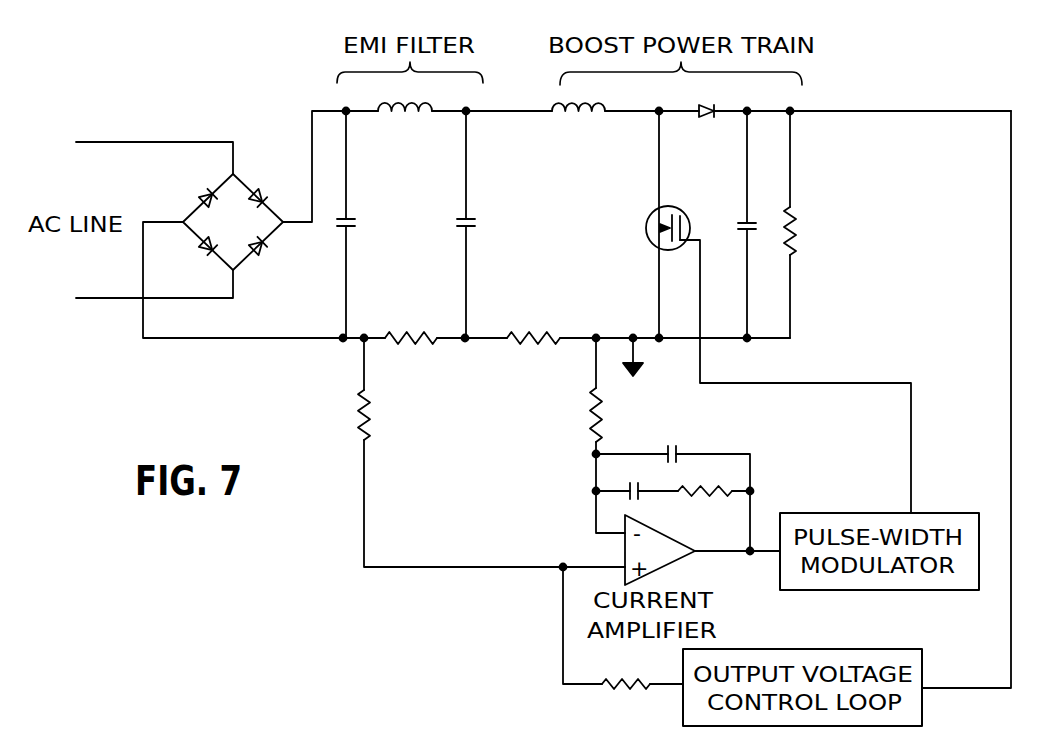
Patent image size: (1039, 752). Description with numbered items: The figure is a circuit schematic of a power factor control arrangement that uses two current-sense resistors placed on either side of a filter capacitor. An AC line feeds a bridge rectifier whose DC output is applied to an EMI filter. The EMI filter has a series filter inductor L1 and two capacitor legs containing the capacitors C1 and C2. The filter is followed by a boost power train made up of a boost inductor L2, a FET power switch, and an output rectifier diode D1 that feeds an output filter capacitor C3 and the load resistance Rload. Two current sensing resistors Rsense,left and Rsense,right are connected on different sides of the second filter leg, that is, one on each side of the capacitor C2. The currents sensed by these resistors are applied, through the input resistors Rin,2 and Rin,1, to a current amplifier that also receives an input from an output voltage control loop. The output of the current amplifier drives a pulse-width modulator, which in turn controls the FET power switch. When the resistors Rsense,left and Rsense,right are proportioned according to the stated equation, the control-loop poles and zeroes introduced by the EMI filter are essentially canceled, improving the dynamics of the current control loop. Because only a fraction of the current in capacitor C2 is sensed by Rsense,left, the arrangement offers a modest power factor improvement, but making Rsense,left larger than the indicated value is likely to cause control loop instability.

The series filter inductor L1 is at (405, 92).
The boost inductor L2 is at (578, 93).
The output rectifier diode D1 is at (710, 96).
The capacitor C1 is at (364, 225).
The capacitor C2 is at (484, 225).
The output filter capacitor C3 is at (731, 225).
The load Rload is at (820, 223).
The current sensing resistor Rsense,left is at (409, 318).
The current sensing resistor Rsense,right is at (537, 318).
The current amplifier input resistor Rin,2 is at (460, 451).
The current amplifier input resistor Rin,1 is at (624, 434).